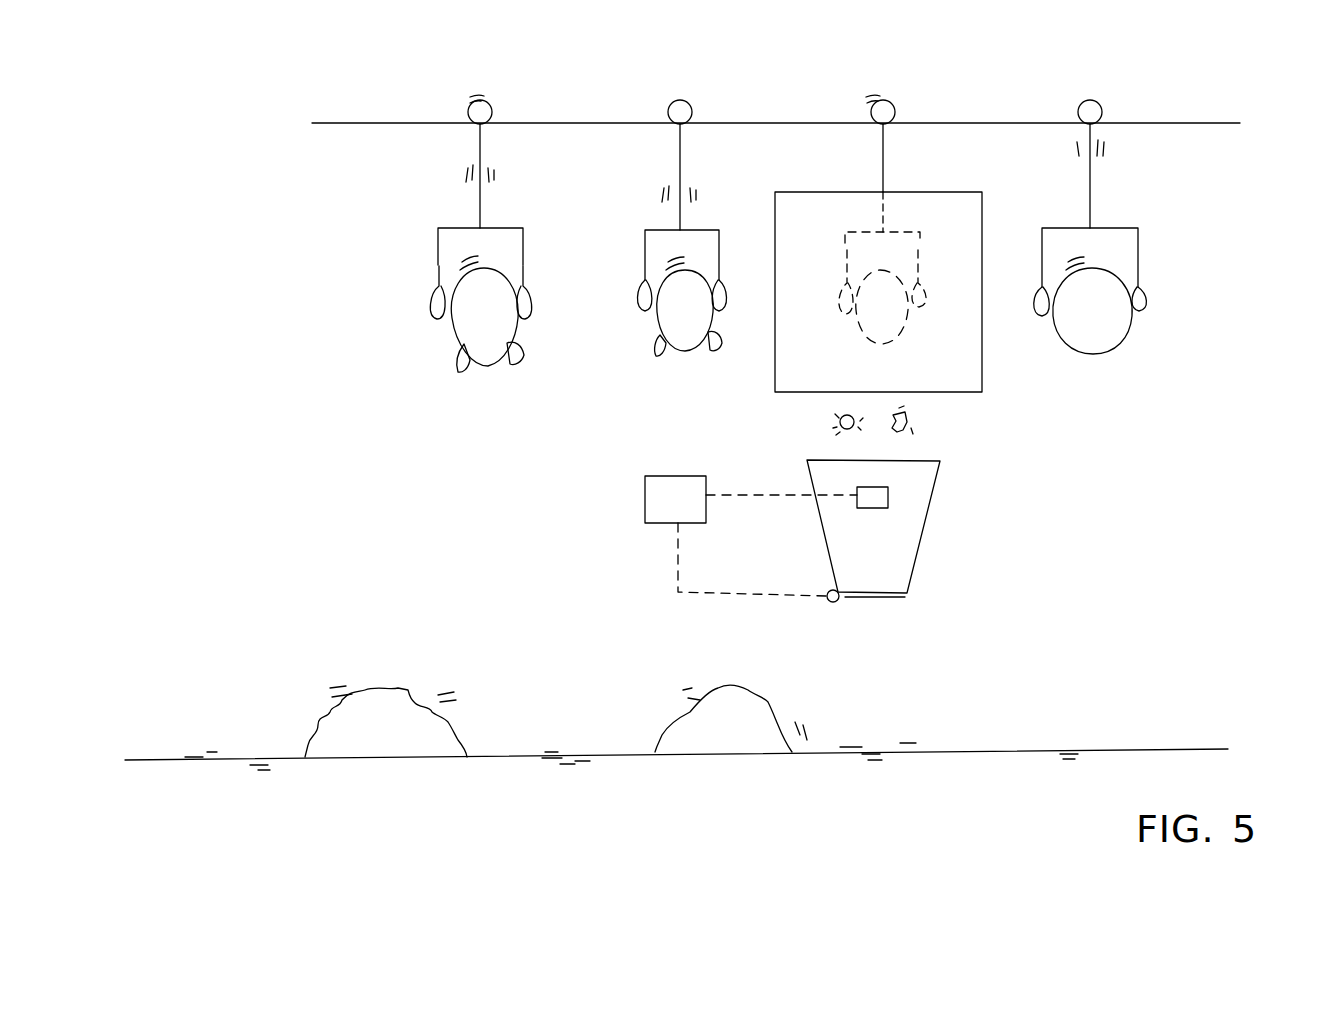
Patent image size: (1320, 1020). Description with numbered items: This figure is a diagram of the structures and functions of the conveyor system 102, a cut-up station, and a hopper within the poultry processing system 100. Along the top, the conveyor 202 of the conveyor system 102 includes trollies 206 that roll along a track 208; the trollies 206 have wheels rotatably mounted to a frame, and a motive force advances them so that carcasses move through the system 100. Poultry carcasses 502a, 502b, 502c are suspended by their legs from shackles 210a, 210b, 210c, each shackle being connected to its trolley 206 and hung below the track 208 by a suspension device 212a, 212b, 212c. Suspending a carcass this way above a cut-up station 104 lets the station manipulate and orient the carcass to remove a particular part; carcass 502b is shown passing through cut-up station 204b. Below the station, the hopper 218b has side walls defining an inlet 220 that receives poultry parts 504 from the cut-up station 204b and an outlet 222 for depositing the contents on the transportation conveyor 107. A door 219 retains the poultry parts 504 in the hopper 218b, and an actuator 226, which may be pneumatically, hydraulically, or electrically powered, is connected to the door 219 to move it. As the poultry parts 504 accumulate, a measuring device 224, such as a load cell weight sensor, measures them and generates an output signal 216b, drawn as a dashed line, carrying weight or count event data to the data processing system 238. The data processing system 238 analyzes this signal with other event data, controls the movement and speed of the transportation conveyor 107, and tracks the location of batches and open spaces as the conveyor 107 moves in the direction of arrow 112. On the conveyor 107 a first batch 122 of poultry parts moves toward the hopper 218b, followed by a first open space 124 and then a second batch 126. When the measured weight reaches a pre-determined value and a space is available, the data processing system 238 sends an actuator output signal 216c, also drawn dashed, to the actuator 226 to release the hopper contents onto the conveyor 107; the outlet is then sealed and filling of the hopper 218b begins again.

The processing system 100 is at (294, 246).
The conveyor system 102 is at (401, 103).
The cut-up station 104 is at (743, 390).
The transportation conveyor 107 is at (1024, 770).
The arrow 112 is at (1102, 686).
The first batch 122 is at (798, 706).
The first open space 124 is at (556, 726).
The second batch 126 is at (411, 668).
The conveyor 202 is at (381, 179).
The cut-up station 204b is at (983, 360).
The trolley 206 is at (690, 88).
The track 208 is at (755, 121).
The shackle 210a is at (652, 230).
The shackle 210b is at (934, 230).
The shackle 210c is at (1140, 229).
The suspension device 212a is at (688, 163).
The suspension device 212b is at (888, 157).
The suspension device 212c is at (1096, 183).
The output signal 216b is at (719, 496).
The actuator output signal 216c is at (704, 589).
The hopper 218b is at (964, 522).
The door 219 is at (884, 600).
The inlet 220 is at (972, 452).
The outlet 222 is at (926, 583).
The measuring device 224 is at (888, 498).
The actuator 226 is at (828, 605).
The data processing system 238 is at (666, 476).
The poultry carcass 502a is at (654, 320).
The poultry carcass 502b is at (890, 354).
The poultry carcass 502c is at (1118, 344).
The poultry parts 504 is at (938, 418).